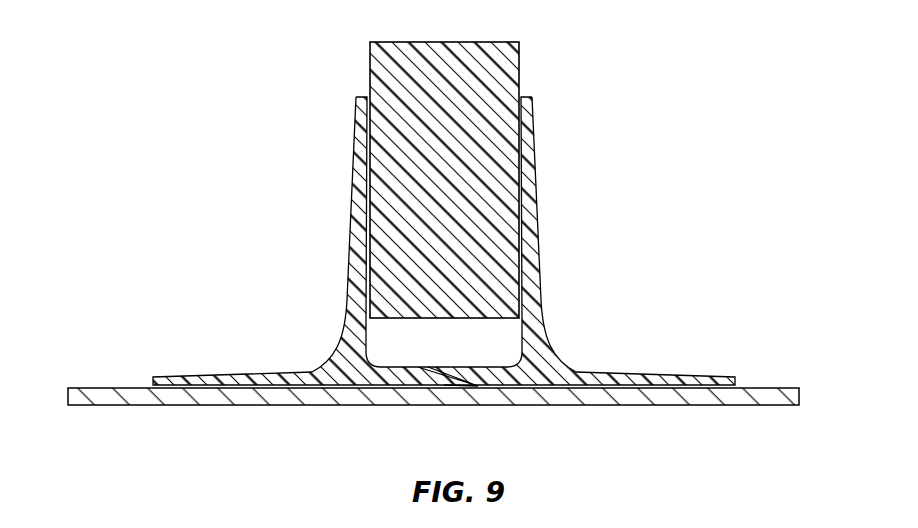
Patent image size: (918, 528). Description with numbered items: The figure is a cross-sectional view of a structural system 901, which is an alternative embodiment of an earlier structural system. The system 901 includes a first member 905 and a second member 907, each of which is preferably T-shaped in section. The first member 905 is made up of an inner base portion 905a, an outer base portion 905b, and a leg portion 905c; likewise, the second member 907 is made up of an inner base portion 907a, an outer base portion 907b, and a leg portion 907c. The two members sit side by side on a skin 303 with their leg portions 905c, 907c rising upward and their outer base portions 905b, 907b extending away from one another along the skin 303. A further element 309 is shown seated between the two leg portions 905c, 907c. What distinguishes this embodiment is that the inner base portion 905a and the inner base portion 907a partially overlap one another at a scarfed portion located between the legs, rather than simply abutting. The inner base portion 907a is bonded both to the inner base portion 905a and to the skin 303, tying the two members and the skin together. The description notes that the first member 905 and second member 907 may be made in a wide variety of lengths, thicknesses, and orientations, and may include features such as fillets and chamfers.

The system 901 is at (255, 188).
The post / stud 309 is at (518, 68).
The skin 303 is at (235, 405).
The first member 905 is at (335, 352).
The inner base portion 905a is at (420, 367).
The outer base portion 905b is at (210, 377).
The leg portion 905c is at (353, 115).
The second member 907 is at (553, 360).
The inner base portion 907a is at (473, 383).
The outer base portion 907b is at (677, 375).
The leg portion 907c is at (535, 170).